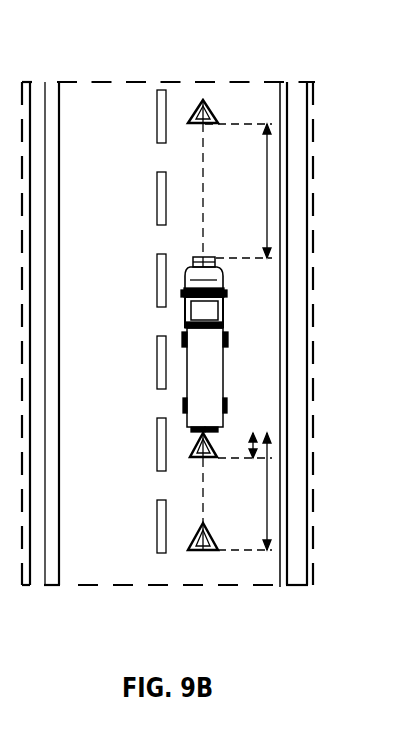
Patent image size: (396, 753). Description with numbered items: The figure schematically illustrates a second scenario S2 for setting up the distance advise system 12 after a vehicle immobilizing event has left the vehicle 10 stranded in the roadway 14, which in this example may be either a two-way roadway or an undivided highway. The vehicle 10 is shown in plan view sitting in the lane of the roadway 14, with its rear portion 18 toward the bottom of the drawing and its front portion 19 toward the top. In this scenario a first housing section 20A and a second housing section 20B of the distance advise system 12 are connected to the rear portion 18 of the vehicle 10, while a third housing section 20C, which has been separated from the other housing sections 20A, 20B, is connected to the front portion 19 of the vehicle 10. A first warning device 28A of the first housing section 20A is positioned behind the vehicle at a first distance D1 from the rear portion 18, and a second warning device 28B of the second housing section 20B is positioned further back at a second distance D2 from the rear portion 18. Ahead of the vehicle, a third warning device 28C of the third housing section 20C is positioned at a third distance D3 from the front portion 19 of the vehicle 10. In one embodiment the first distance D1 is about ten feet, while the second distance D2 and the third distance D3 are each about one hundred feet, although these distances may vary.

The vehicle 10 is at (239, 332).
The distance advise system 12 is at (200, 377).
The roadway 14 is at (116, 343).
The rear portion 18 is at (186, 412).
The front portion 19 is at (178, 270).
The first housing section 20A is at (190, 430).
The second housing section 20B is at (213, 428).
The third housing section 20C is at (210, 254).
The first warning device 28A is at (189, 458).
The second warning device 28B is at (208, 553).
The third warning device 28C is at (207, 99).
The first distance D1 is at (238, 443).
The second distance D2 is at (249, 491).
The third distance D3 is at (241, 191).
The second scenario S2 is at (183, 626).